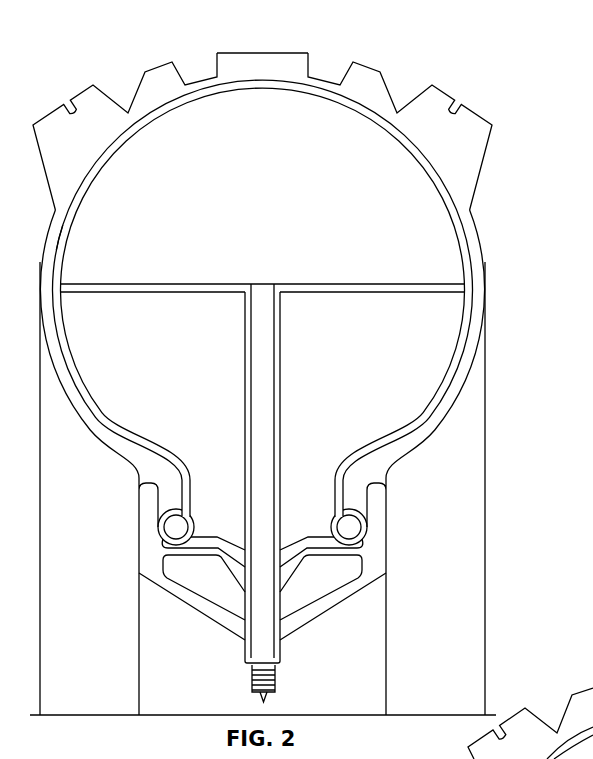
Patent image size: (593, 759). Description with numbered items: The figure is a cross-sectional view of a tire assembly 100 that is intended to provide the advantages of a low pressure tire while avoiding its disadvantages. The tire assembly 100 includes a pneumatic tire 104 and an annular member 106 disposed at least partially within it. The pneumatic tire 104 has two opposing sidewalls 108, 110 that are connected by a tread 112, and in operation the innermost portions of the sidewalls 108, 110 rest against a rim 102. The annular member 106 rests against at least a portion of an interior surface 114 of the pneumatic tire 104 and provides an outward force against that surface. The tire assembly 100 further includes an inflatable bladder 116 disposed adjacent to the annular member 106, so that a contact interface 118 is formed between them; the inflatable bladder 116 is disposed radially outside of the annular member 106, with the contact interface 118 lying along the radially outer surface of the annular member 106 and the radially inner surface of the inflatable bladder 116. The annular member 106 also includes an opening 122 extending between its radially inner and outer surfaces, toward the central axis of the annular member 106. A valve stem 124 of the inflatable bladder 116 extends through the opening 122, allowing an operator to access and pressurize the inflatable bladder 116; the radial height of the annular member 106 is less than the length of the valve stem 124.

The tire assembly 100 is at (389, 59).
The rim 102 is at (139, 563).
The pneumatic tire 104 is at (471, 212).
The annular member 106 is at (444, 388).
The sidewall 108 is at (102, 444).
The sidewall 110 is at (422, 444).
The tread 112 is at (273, 52).
The interior surface 114 is at (70, 238).
The inflatable bladder 116 is at (278, 176).
The contact interface 118 is at (360, 283).
The opening 122 is at (282, 378).
The valve stem 124 is at (270, 651).